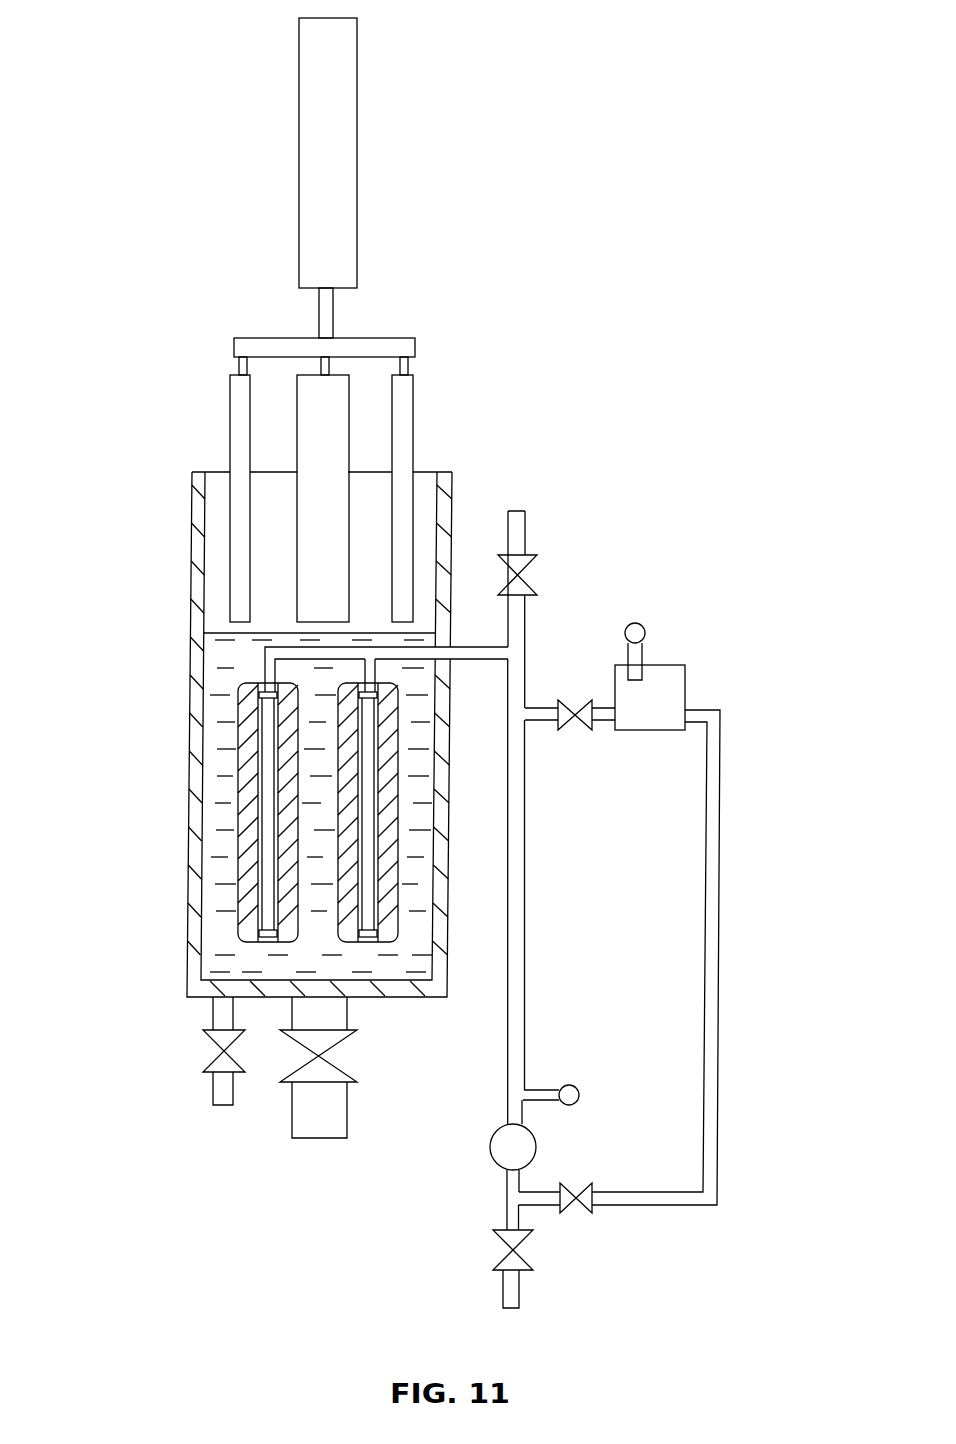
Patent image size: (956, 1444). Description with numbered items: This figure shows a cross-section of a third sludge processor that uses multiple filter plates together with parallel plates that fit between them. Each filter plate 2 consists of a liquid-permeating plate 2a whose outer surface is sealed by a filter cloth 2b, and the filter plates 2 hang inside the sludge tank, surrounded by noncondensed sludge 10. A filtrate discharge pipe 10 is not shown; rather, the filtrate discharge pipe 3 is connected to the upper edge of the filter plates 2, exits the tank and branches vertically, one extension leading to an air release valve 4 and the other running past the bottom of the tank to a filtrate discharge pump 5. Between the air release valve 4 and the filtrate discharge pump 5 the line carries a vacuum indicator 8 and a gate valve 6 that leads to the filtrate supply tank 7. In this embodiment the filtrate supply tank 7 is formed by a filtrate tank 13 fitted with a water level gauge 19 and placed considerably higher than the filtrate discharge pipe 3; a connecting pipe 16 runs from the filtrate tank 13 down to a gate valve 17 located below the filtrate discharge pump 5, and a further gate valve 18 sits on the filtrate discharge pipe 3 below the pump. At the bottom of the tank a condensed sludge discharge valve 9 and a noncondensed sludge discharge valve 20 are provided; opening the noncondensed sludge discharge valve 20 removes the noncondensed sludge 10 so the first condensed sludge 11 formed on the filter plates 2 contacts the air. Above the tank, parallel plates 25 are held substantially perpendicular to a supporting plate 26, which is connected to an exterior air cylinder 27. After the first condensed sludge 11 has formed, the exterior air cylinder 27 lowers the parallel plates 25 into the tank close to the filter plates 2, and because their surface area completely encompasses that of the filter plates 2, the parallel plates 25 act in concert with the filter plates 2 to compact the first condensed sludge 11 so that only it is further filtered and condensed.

The filter plate 2 is at (225, 812).
The liquid-permeating plate 2a is at (267, 867).
The filter cloth 2b is at (258, 812).
The filtrate discharge pipe 3 is at (523, 953).
The air release valve 4 is at (530, 582).
The filtrate discharge pump 5 is at (490, 1145).
The gate valve 6 is at (565, 727).
The filtrate supply tank 7 is at (721, 898).
The vacuum indicator 8 is at (580, 1091).
The condensed sludge discharge valve 9 is at (323, 1063).
The noncondensed sludge 10 is at (212, 645).
The first condensed sludge 11 is at (240, 725).
The filtrate tank 13 is at (685, 687).
The connecting pipe 16 is at (701, 957).
The gate valve 17 is at (570, 1208).
The gate valve 18 is at (507, 1253).
The water level gauge 19 is at (645, 628).
The noncondensed sludge discharge valve 20 is at (223, 1052).
The parallel plates 25 is at (348, 392).
The supporting plate 26 is at (392, 338).
The exterior air cylinder 27 is at (357, 110).